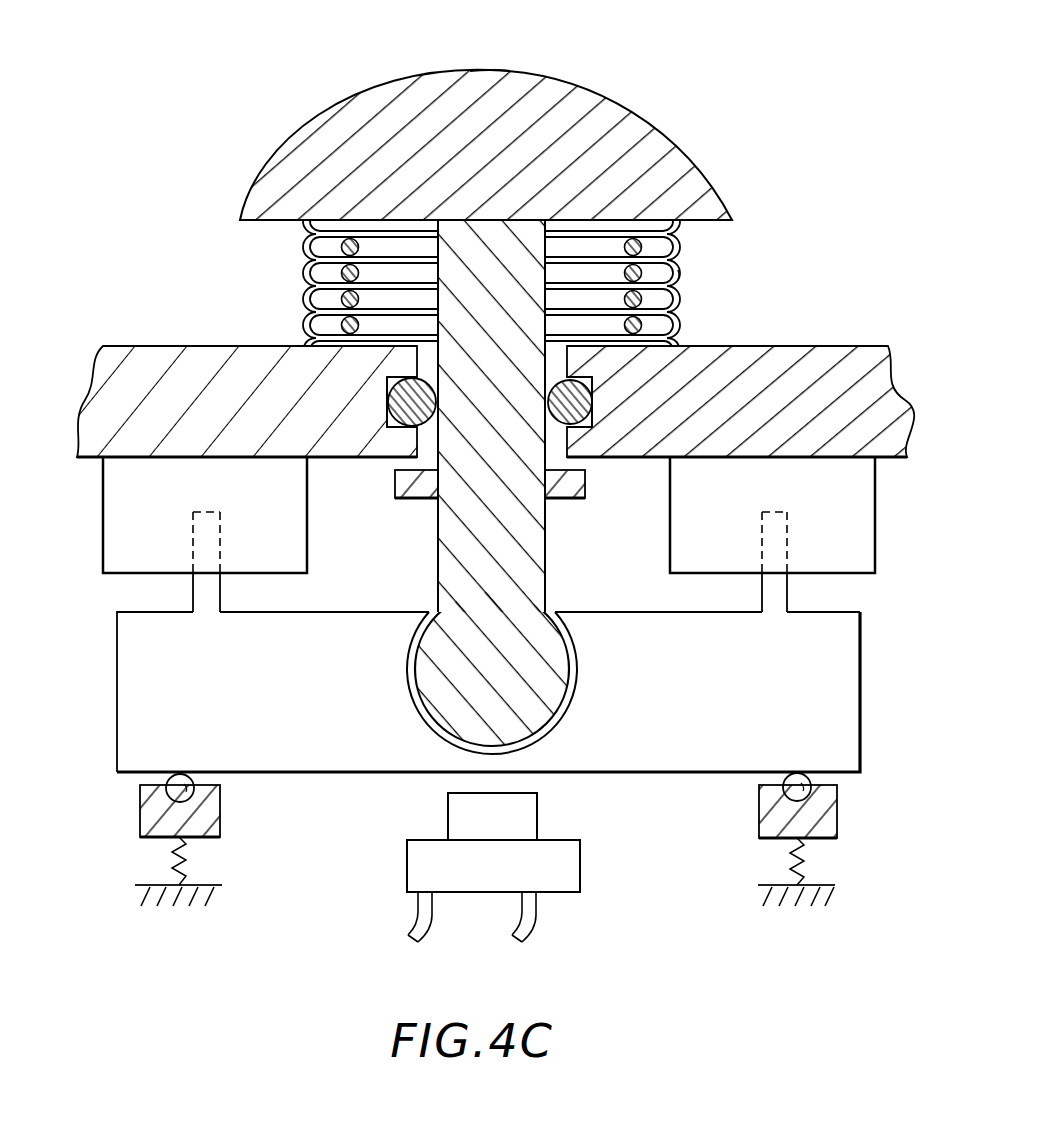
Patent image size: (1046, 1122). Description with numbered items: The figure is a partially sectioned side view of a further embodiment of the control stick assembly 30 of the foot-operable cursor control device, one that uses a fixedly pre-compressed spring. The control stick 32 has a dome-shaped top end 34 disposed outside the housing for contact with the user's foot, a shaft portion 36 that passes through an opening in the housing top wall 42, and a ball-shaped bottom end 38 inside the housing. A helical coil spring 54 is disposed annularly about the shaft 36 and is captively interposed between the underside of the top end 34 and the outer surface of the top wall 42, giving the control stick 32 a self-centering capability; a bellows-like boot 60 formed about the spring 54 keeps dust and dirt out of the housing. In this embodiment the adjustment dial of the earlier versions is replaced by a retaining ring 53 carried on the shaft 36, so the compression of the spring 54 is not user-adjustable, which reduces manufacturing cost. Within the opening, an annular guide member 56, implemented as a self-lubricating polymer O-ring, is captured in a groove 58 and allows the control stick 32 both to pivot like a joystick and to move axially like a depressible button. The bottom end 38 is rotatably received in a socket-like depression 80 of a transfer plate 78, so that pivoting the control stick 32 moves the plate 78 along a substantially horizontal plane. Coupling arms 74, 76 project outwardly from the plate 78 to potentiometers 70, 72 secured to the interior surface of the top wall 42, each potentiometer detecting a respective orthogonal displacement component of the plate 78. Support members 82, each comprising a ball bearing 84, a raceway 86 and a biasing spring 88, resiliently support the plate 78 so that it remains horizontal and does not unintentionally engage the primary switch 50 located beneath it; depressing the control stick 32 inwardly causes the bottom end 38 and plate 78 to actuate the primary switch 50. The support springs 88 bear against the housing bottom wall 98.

The control stick assembly 30 is at (768, 178).
The control stick 32 is at (506, 66).
The top end 34 is at (642, 120).
The shaft portion 36 is at (548, 547).
The bottom end 38 is at (566, 690).
The top wall 42 is at (757, 345).
The primary switch 50 is at (580, 885).
The retaining ring 53 is at (395, 497).
The helical coil spring 54 is at (343, 244).
The annular guide member 56 is at (408, 435).
The groove 58 is at (400, 405).
The bellows-like boot 60 is at (680, 292).
The potentiometer 70 is at (877, 531).
The potentiometer 72 is at (103, 555).
The coupling arm 74 is at (192, 578).
The coupling arm 76 is at (790, 601).
The transfer plate 78 is at (862, 717).
The socket-like depression 80 is at (409, 682).
The support member 82 is at (133, 848).
The ball bearing 84 is at (160, 781).
The raceway 86 is at (139, 812).
The spring 88 is at (188, 868).
The bottom wall 98 is at (218, 895).